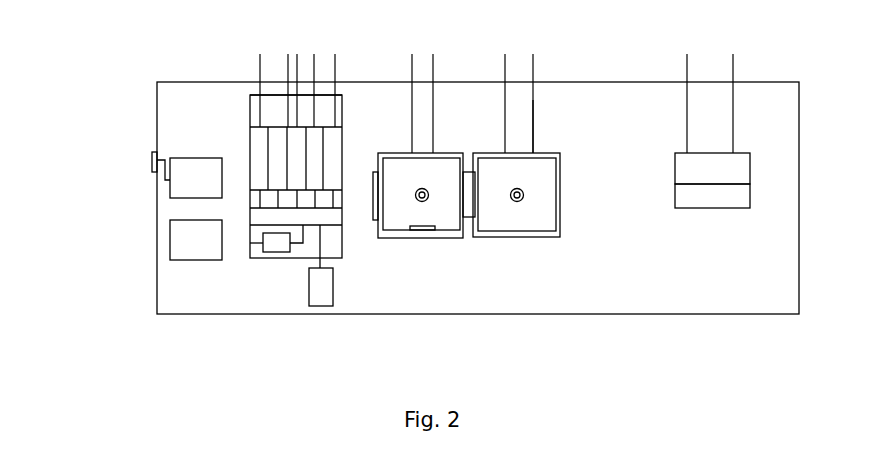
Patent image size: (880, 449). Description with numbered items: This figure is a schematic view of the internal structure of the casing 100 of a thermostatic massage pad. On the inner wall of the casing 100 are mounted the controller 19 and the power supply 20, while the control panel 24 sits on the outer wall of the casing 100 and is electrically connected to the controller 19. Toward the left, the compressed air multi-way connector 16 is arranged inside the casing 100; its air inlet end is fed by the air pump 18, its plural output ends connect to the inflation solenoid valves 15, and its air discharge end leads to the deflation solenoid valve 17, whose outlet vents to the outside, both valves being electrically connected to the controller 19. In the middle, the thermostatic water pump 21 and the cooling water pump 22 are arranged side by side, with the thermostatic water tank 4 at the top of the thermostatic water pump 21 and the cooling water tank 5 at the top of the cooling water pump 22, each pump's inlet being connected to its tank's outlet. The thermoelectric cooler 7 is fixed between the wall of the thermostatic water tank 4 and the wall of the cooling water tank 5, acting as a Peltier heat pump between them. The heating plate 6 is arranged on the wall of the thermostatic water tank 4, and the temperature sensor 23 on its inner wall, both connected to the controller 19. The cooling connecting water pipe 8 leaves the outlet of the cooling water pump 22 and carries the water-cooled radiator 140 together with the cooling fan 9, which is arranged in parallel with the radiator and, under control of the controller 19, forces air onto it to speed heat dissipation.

The casing 100 is at (157, 195).
The controller 19 is at (195, 158).
The control panel 24 is at (152, 156).
The power supply 20 is at (170, 240).
The compressed air multi-way connector 16 is at (265, 190).
The inflation solenoid valve 15 is at (278, 117).
The deflation solenoid valve 17 is at (277, 252).
The air pump 18 is at (322, 306).
The thermostatic water tank 4 is at (452, 238).
The thermostatic water pump 21 is at (390, 240).
The heating plate 6 is at (373, 212).
The temperature sensor 23 is at (423, 232).
The thermoelectric cooler 7 is at (466, 259).
The cooling water tank 5 is at (548, 237).
The cooling water pump 22 is at (530, 237).
The cooling connecting water pipe 8 is at (533, 119).
The water-cooled radiator 140 is at (750, 173).
The cooling fan 9 is at (750, 193).